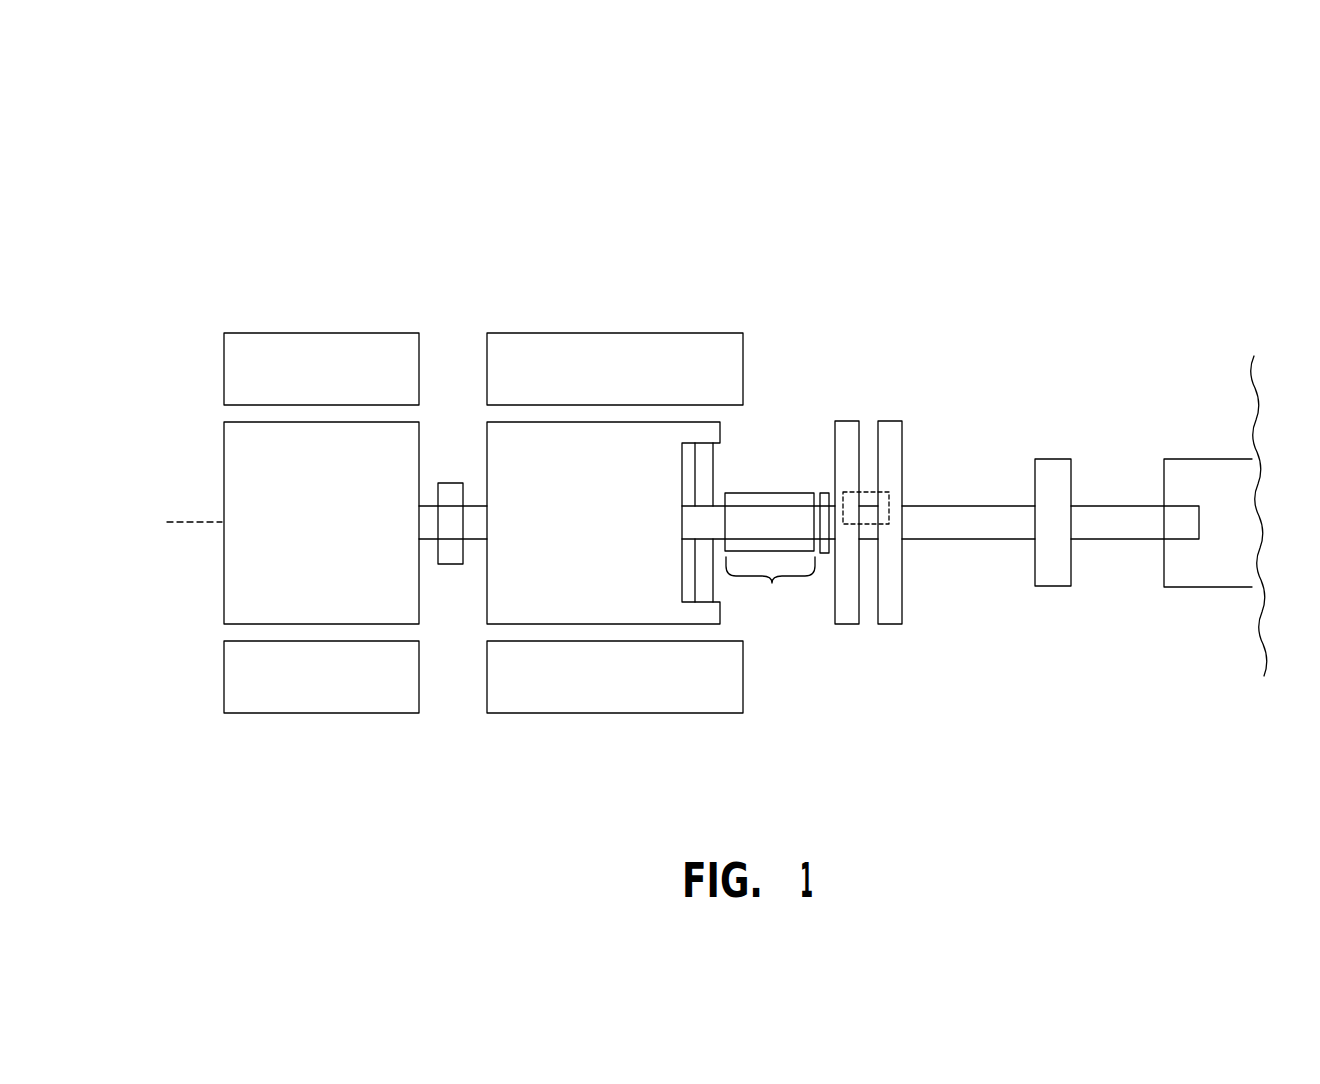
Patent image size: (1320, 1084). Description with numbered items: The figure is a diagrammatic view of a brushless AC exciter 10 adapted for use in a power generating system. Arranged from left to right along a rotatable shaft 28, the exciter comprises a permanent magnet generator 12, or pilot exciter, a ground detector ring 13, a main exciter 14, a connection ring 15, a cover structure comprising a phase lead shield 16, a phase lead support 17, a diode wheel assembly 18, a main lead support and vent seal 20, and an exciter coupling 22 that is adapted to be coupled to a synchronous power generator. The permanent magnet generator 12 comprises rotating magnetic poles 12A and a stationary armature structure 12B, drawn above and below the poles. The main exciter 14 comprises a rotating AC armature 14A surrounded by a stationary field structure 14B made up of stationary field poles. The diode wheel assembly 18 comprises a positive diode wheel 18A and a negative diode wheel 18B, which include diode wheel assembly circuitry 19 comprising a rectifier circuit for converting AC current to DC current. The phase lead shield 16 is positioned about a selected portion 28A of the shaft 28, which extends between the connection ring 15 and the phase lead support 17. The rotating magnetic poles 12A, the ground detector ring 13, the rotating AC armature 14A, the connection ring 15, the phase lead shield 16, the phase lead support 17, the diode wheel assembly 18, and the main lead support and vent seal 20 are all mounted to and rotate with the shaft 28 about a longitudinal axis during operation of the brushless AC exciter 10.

The brushless AC exciter 10 is at (1180, 226).
The permanent magnet generator 12 is at (343, 322).
The rotating magnetic poles 12A is at (354, 539).
The stationary armature structure 12B is at (355, 384).
The ground detector ring 13 is at (452, 487).
The main exciter 14 is at (473, 328).
The rotating AC armature 14A is at (618, 577).
The stationary field structure 14B is at (687, 384).
The connection ring 15 is at (702, 463).
The phase lead shield 16 is at (757, 500).
The phase lead support 17 is at (826, 493).
The diode wheel assembly 18 is at (902, 413).
The positive diode wheel 18A is at (847, 625).
The negative diode wheel 18B is at (887, 625).
The diode wheel assembly circuitry 19 is at (890, 503).
The main lead support and vent seal 20 is at (1067, 475).
The exciter coupling 22 is at (1177, 571).
The rotatable shaft 28 is at (975, 521).
The selected portion of the shaft 28A is at (770, 594).